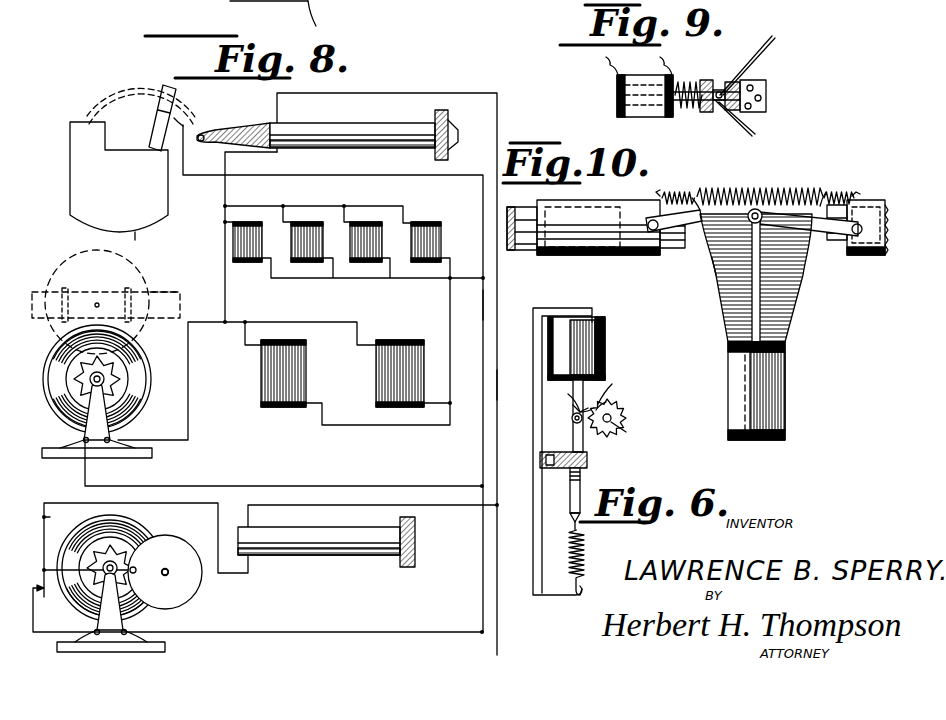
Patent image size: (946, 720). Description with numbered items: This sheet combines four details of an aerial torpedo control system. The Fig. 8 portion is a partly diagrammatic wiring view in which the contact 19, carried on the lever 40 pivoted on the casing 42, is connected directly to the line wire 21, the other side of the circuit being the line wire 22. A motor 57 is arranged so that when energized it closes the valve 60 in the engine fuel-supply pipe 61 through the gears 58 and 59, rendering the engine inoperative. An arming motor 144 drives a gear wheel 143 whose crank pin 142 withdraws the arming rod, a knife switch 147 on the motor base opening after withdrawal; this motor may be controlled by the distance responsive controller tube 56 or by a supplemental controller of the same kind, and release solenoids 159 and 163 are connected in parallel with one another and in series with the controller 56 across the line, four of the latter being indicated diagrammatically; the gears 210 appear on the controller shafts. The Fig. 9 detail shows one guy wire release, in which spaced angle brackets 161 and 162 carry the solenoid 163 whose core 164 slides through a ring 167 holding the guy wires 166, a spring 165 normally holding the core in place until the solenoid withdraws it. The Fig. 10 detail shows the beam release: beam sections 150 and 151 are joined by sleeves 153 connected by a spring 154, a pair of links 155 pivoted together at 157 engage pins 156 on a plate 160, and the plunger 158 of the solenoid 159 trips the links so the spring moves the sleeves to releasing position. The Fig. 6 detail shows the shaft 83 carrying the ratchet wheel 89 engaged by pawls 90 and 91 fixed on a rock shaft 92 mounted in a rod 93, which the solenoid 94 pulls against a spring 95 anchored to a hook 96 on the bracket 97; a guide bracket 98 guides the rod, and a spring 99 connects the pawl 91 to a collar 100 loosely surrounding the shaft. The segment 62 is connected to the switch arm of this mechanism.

In FIG. 8, the contact 19 is at (158, 88).
In FIG. 8, the line wire 21 is at (483, 300).
In FIG. 8, the line wire 22 is at (497, 378).
In FIG. 8, the lever 40 is at (158, 120).
In FIG. 8, the casing 42 is at (119, 181).
In FIG. 8, the controller tube 56 is at (340, 126).
In FIG. 8, the motor 57 is at (140, 420).
In FIG. 8, the gear 58 is at (110, 382).
In FIG. 8, the gear 59 is at (66, 266).
In FIG. 8, the valve 60 is at (106, 290).
In FIG. 8, the fuel-supply pipe 61 is at (175, 292).
In FIG. 8, the segment 62 is at (318, 8).
In FIG. 8, the crank pin 142 is at (165, 572).
In FIG. 8, the gear wheel 143 is at (164, 585).
In FIG. 8, the motor 144 is at (150, 524).
In FIG. 8, the knife switch 147 is at (62, 517).
In FIG. 10, the beam section 150 is at (520, 250).
In FIG. 10, the beam section 151 is at (672, 248).
In FIG. 10, the sleeve 153 is at (598, 255).
In FIG. 10, the spring 154 is at (762, 186).
In FIG. 10, the link 155 is at (700, 226).
In FIG. 10, the pin 156 is at (694, 190).
In FIG. 10, the pivot 157 is at (748, 222).
In FIG. 10, the plunger 158 is at (762, 250).
In FIG. 8, the solenoid 159 is at (261, 375).
In FIG. 10, the solenoid 159 is at (786, 368).
In FIG. 10, the plate 160 is at (722, 290).
In FIG. 9, the angle bracket 161 is at (684, 112).
In FIG. 9, the angle bracket 162 is at (766, 86).
In FIG. 8, the solenoid 163 is at (243, 262).
In FIG. 9, the solenoid 163 is at (625, 88).
In FIG. 9, the core 164 is at (735, 82).
In FIG. 9, the spring 165 is at (690, 78).
In FIG. 9, the guy wire 166 is at (772, 38).
In FIG. 9, the ring 167 is at (716, 104).
In FIG. 8, the gear 210 is at (452, 112).
In FIG. 6, the shaft 83 is at (612, 418).
In FIG. 6, the ratchet wheel 89 is at (622, 406).
In FIG. 6, the pawl 90 is at (572, 405).
In FIG. 6, the pawl 91 is at (612, 384).
In FIG. 6, the rock shaft 92 is at (572, 422).
In FIG. 6, the rod 93 is at (584, 448).
In FIG. 6, the solenoid 94 is at (576, 348).
In FIG. 6, the spring 95 is at (589, 558).
In FIG. 6, the hook 96 is at (560, 600).
In FIG. 6, the bracket 97 is at (570, 520).
In FIG. 6, the guide bracket 98 is at (588, 462).
In FIG. 6, the spring 99 is at (606, 402).
In FIG. 6, the collar 100 is at (626, 432).